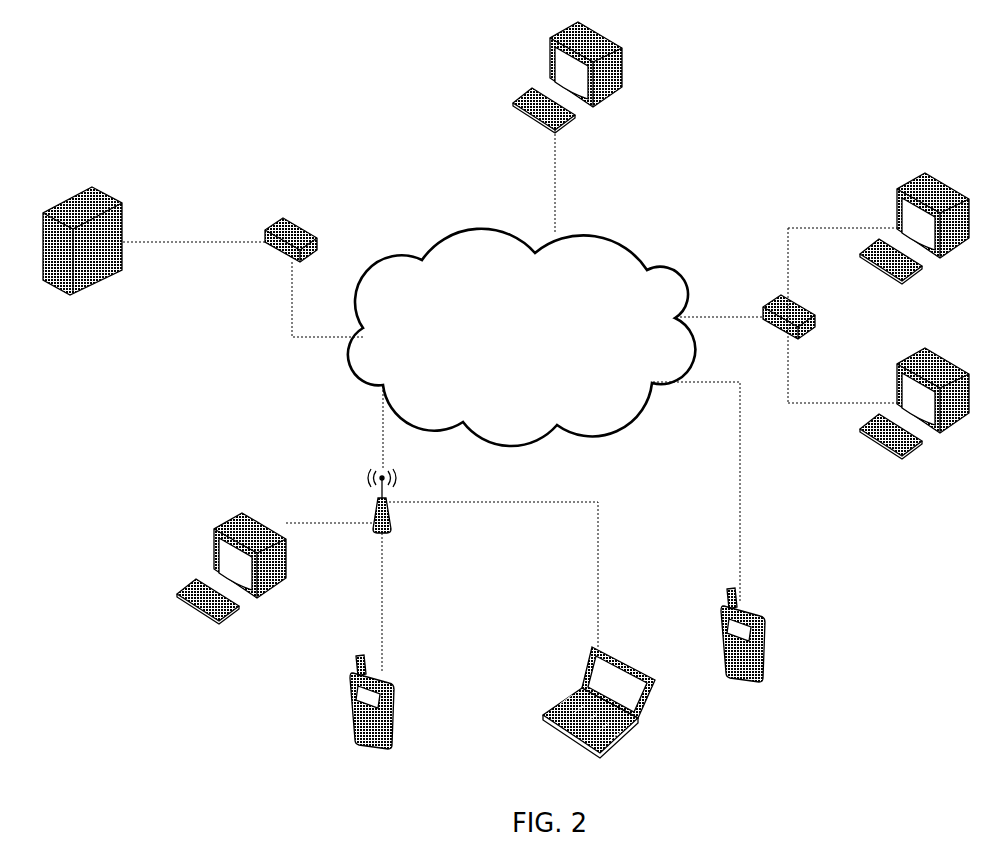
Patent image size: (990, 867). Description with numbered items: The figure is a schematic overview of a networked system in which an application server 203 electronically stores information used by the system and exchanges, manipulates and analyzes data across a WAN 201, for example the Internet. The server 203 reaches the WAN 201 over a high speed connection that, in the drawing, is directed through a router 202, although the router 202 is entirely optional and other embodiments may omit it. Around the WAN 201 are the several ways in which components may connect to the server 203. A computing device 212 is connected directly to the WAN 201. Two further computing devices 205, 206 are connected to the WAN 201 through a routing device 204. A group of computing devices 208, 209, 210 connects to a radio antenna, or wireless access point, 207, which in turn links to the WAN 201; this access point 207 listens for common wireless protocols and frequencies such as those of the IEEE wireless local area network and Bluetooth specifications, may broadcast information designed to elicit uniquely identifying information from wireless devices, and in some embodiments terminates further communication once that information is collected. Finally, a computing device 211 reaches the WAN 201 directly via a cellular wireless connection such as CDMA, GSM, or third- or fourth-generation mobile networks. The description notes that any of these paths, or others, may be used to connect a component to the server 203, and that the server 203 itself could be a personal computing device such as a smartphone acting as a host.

The WAN 201 is at (521, 350).
The router 202 is at (268, 260).
The application server 203 is at (91, 246).
The routing device 204 is at (782, 328).
The computing device 205 is at (923, 230).
The computing device 206 is at (918, 409).
The radio antenna (or wireless access point) 207 is at (400, 507).
The computing device 208 is at (231, 573).
The computing device 209 is at (380, 721).
The computing device 210 is at (602, 709).
The computing device 211 is at (756, 655).
The computing device 212 is at (576, 77).